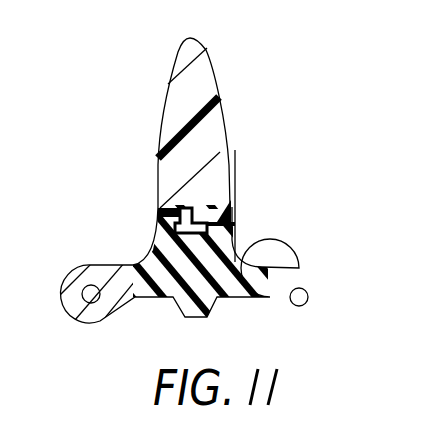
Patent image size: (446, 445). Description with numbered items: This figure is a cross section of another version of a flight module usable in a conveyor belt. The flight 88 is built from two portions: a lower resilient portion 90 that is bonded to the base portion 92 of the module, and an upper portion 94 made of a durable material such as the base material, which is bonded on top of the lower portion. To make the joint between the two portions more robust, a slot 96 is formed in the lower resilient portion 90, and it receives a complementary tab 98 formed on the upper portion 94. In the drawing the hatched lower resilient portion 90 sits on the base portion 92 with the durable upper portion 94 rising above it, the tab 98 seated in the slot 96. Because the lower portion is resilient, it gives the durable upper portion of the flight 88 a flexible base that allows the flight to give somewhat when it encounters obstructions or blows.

The flight 88 is at (231, 156).
The lower resilient portion 90 is at (233, 246).
The base portion 92 is at (226, 288).
The upper portion 94 is at (177, 70).
The slot 96 is at (231, 223).
The tab 98 is at (190, 212).